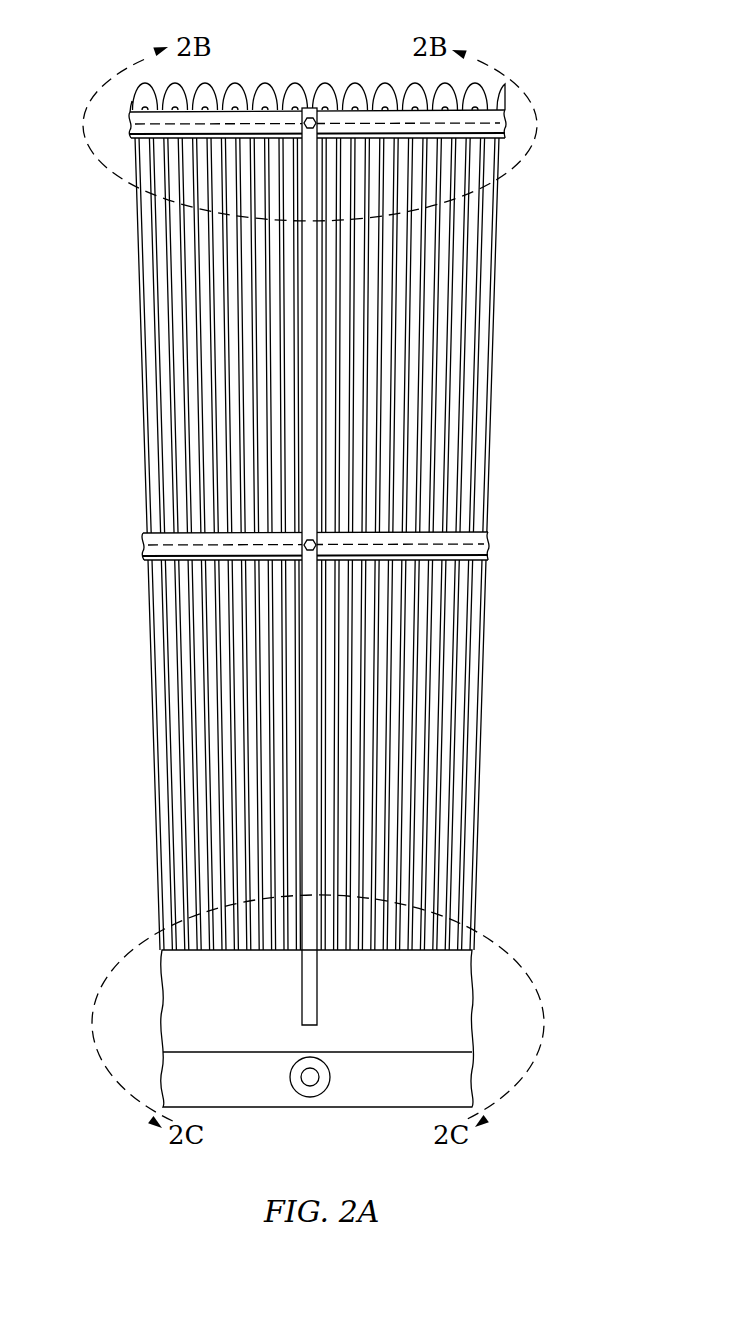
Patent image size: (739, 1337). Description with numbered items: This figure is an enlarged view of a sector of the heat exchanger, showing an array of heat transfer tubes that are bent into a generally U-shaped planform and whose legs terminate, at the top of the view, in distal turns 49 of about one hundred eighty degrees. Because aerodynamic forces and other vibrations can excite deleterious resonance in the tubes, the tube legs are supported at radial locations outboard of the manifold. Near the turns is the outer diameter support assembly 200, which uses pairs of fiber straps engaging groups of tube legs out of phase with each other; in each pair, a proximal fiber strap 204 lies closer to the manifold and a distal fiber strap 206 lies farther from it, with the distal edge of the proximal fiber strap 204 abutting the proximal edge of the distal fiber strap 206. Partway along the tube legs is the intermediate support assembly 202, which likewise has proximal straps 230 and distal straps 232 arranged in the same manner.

The distal turn 49 is at (298, 92).
The outer diameter support assembly 200 is at (130, 110).
The distal fiber strap 206 is at (464, 118).
The proximal fiber strap 204 is at (477, 133).
The intermediate support assembly 202 is at (136, 533).
The distal strap 232 is at (470, 541).
The proximal strap 230 is at (472, 551).